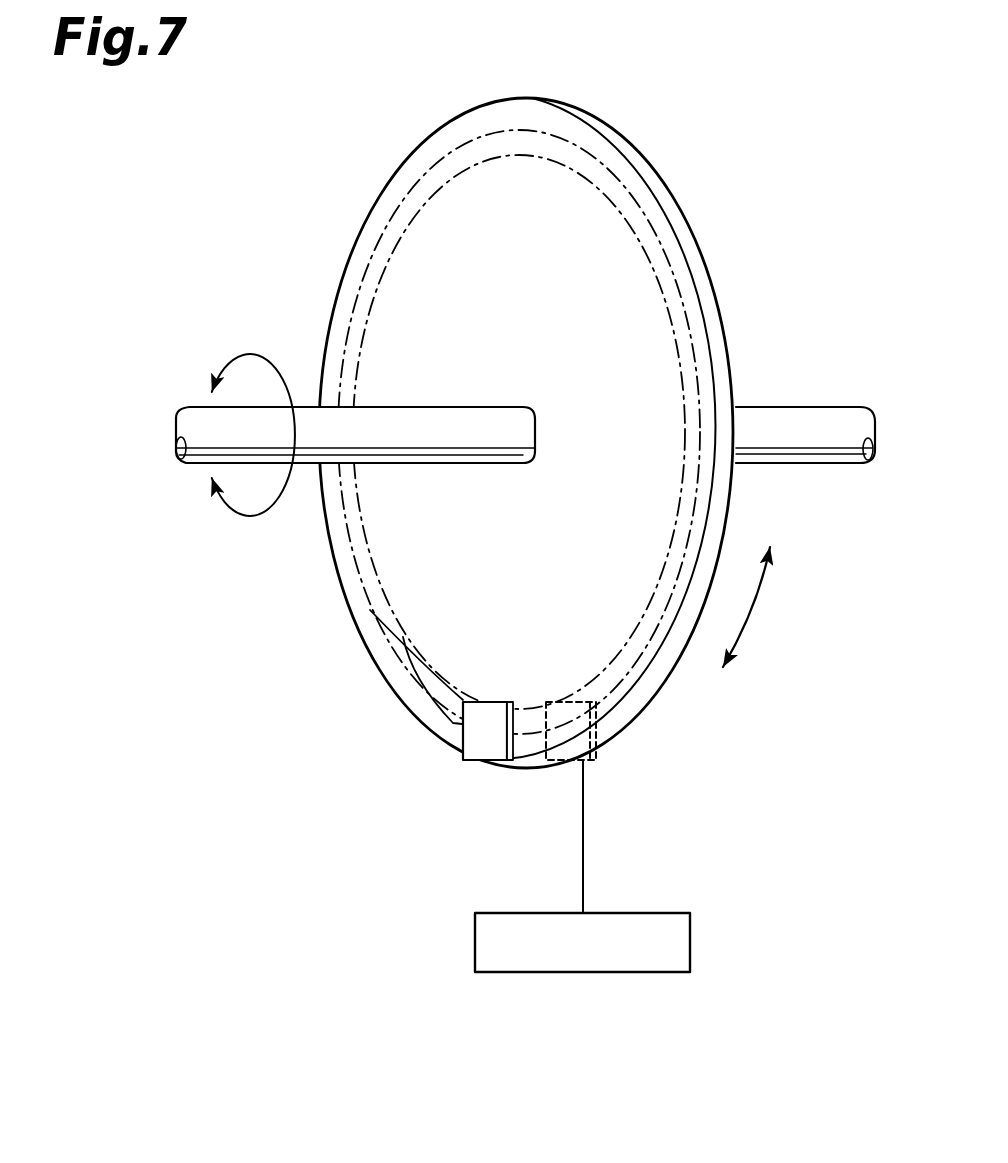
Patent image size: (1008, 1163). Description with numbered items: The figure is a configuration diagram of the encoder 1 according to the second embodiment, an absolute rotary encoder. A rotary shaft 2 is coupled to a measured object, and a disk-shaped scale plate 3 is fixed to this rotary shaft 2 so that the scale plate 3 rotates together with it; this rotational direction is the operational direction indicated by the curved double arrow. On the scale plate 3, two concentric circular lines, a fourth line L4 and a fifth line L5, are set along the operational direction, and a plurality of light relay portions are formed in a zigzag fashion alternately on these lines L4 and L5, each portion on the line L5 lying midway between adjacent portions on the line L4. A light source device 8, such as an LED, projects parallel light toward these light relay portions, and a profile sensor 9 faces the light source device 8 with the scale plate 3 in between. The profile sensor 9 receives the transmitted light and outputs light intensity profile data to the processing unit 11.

The encoder 1 is at (716, 105).
The rotary shaft 2 is at (813, 420).
The scale plate 3 is at (349, 258).
The light source device 8 is at (463, 745).
The profile sensor 9 is at (613, 737).
The processing unit 11 is at (692, 938).
The line (fourth line) L4 is at (376, 655).
The line (fifth line) L5 is at (340, 578).